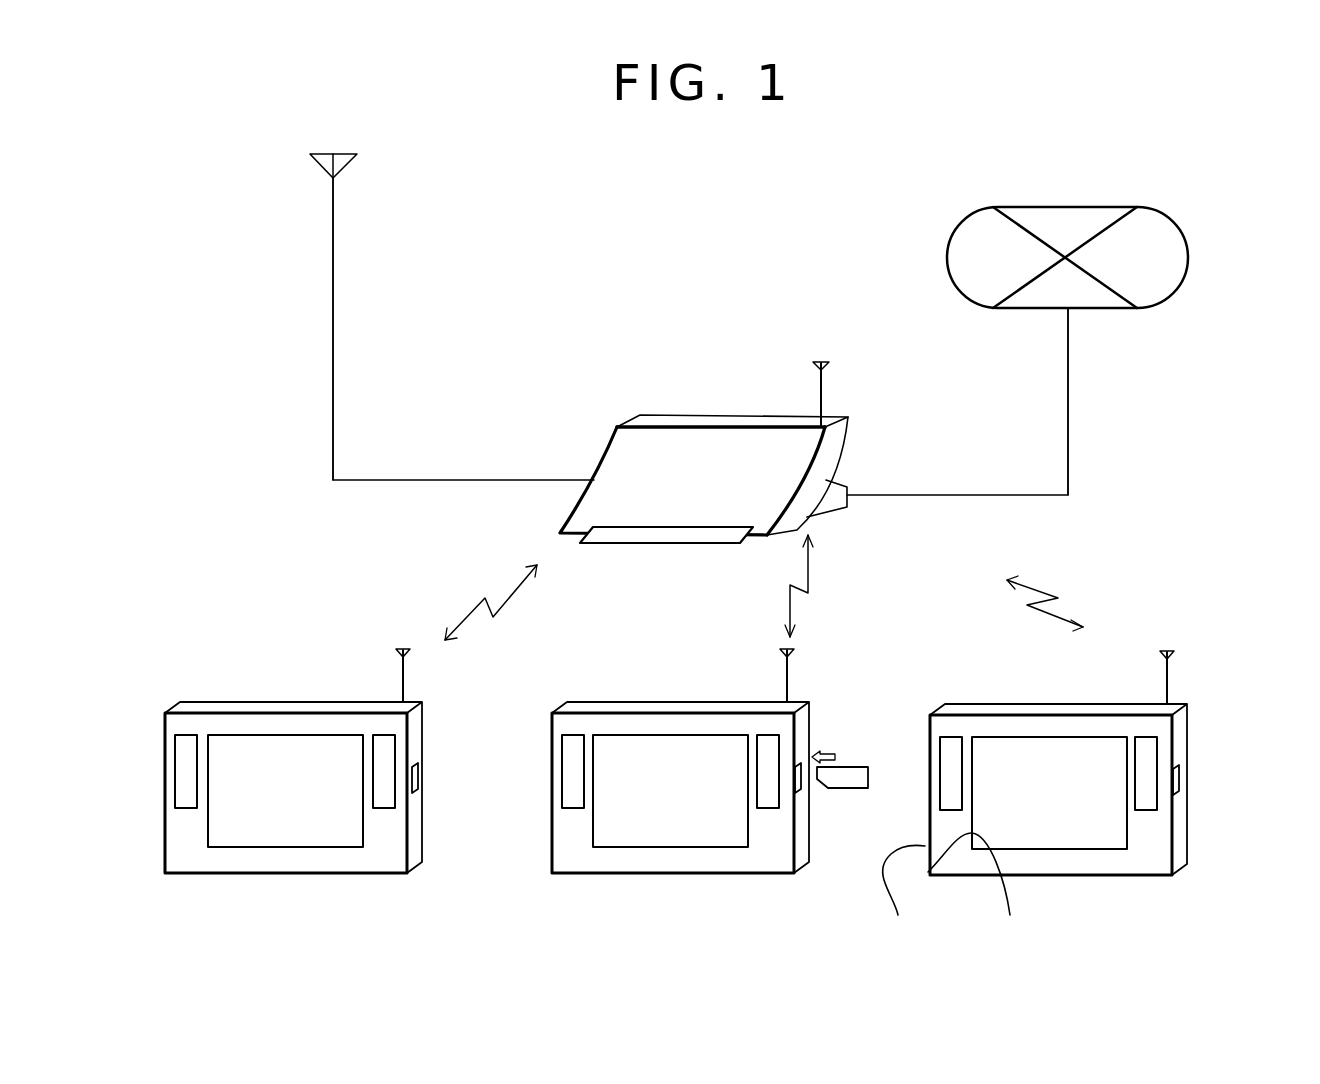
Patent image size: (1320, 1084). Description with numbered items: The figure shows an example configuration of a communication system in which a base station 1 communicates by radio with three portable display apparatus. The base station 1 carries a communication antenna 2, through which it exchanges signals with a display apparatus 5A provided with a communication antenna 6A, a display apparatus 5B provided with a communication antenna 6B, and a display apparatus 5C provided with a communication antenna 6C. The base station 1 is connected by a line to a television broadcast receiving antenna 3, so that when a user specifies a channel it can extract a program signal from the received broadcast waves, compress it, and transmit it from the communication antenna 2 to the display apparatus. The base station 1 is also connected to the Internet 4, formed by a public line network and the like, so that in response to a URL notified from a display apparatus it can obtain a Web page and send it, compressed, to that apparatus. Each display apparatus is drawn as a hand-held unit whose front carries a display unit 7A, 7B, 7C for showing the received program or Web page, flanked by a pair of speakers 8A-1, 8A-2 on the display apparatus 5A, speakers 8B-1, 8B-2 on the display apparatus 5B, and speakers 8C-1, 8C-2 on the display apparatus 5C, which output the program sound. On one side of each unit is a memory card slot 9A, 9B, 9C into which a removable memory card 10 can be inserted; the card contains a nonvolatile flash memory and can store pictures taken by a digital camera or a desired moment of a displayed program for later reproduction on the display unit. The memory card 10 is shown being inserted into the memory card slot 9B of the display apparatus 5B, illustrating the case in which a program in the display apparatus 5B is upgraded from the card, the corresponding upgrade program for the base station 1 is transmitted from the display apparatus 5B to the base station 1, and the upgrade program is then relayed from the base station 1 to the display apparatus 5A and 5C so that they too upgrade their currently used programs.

The base station 1 is at (602, 452).
The communication antenna 2 is at (822, 360).
The television broadcast receiving antenna 3 is at (320, 164).
The Internet 4 is at (1115, 310).
The display apparatus 5A is at (356, 866).
The display apparatus 5B is at (733, 866).
The display apparatus 5C is at (1104, 868).
The communication antenna 6A is at (403, 648).
The communication antenna 6B is at (793, 658).
The communication antenna 6C is at (1172, 657).
The display unit 7A is at (259, 838).
The display unit 7B is at (631, 838).
The display unit 7C is at (1021, 840).
The speaker 8A-1 is at (183, 745).
The speaker 8A-2 is at (387, 742).
The speaker 8B-1 is at (573, 745).
The speaker 8B-2 is at (770, 742).
The speaker 8C-1 is at (950, 745).
The speaker 8C-2 is at (1146, 750).
The memory card slot 9A is at (421, 779).
The memory card slot 9B is at (804, 796).
The memory card slot 9C is at (1182, 779).
The memory card 10 is at (865, 790).